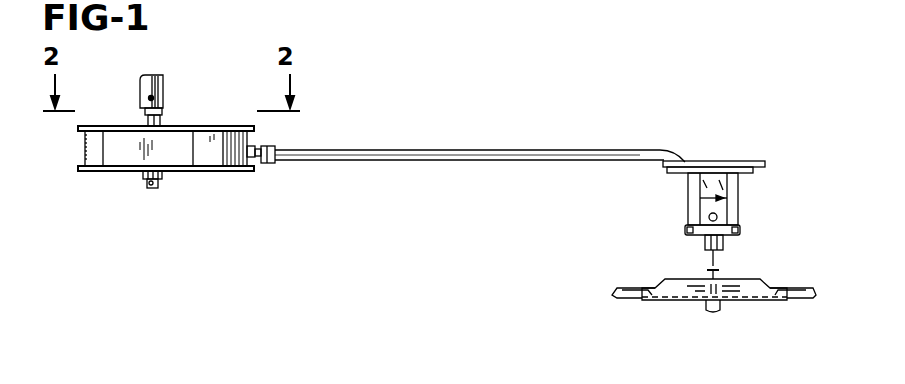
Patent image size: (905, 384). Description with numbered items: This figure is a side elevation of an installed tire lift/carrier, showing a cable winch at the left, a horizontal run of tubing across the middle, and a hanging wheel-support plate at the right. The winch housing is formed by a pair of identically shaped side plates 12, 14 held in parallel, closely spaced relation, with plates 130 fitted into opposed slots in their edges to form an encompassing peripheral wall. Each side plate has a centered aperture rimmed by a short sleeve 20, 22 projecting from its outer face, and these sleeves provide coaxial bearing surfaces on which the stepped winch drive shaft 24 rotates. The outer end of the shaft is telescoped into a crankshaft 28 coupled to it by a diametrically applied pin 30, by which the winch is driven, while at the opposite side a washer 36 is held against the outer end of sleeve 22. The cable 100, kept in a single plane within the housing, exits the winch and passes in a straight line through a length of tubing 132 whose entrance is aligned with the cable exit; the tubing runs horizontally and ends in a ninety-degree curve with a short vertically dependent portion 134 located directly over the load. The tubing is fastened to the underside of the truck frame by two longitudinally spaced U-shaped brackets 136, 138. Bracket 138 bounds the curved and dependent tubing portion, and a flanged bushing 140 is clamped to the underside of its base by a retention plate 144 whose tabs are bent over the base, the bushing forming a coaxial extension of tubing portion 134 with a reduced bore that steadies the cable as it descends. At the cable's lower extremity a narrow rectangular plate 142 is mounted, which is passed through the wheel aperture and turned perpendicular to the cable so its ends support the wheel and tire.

The side plate 12 is at (236, 125).
The side plate 14 is at (235, 172).
The sleeve 20 is at (143, 120).
The sleeve 22 is at (145, 173).
The winch drive shaft 24 is at (150, 193).
The crankshaft 28 is at (158, 78).
The pin 30 is at (150, 97).
The washer 36 is at (160, 176).
The cable 100 is at (716, 262).
The plates 130 is at (105, 152).
The length of tubing 132 is at (440, 142).
The vertically dependent portion of tubing 134 is at (700, 186).
The bracket 136 is at (272, 147).
The bracket 138 is at (738, 162).
The bushing 140 is at (705, 243).
The plate 142 is at (755, 300).
The retention plate 144 is at (740, 230).